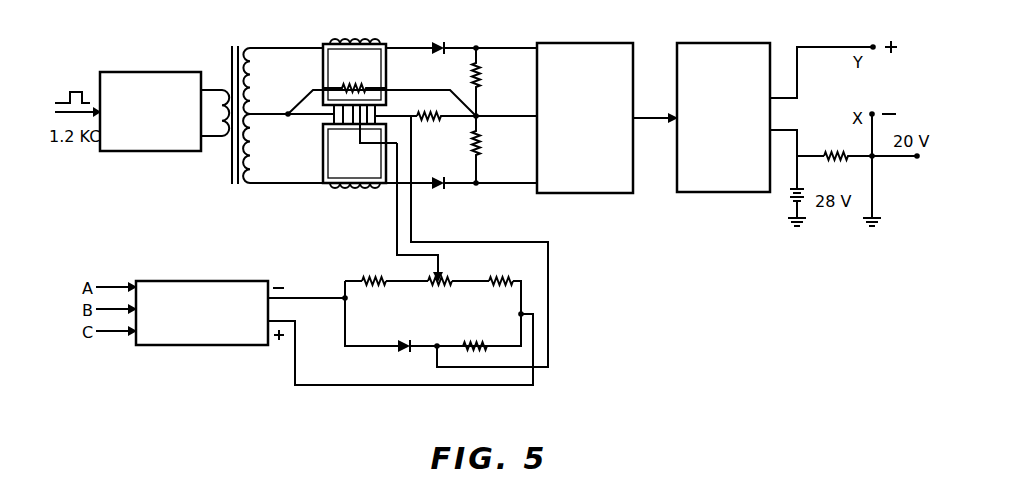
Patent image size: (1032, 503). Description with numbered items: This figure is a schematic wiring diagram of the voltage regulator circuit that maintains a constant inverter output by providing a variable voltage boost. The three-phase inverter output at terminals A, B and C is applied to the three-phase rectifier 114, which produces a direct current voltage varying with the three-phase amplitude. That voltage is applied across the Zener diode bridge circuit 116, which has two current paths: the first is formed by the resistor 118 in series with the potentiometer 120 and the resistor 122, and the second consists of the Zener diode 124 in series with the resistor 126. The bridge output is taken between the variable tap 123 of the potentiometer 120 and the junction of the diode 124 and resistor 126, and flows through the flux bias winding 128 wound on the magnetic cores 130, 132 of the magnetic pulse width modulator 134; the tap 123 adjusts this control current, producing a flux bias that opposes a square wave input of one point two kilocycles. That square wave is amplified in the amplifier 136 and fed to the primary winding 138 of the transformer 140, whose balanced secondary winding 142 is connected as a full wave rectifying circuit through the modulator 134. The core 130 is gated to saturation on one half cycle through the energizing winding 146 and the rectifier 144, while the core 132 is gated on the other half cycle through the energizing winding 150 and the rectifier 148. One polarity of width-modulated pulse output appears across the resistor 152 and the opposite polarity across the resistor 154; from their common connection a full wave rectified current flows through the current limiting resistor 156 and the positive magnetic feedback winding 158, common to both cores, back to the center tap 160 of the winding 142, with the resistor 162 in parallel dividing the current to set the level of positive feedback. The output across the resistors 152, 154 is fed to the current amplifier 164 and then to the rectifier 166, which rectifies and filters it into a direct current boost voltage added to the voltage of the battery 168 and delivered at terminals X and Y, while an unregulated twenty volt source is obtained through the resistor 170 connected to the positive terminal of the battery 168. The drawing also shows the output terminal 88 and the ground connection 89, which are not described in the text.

The 3-phase rectifier 114 is at (177, 281).
The Zener diode bridge circuit 116 is at (514, 271).
The resistor 118 is at (378, 275).
The potentiometer 120 is at (430, 290).
The resistor 122 is at (500, 290).
The variable tap 123 is at (441, 276).
The Zener diode 124 is at (398, 349).
The resistor 126 is at (490, 329).
The flux bias winding 128 is at (387, 107).
The magnetic core 130 is at (355, 100).
The magnetic core 132 is at (322, 171).
The magnetic pulse width modulator 134 is at (373, 30).
The amplifier 136 is at (140, 72).
The primary winding 138 is at (221, 87).
The transformer 140 is at (234, 47).
The balanced secondary winding 142 is at (255, 81).
The rectifier 144 is at (435, 44).
The energizing winding 146 is at (384, 44).
The rectifier 148 is at (437, 186).
The energizing winding 150 is at (368, 181).
The resistor 152 is at (480, 87).
The resistor 154 is at (480, 152).
The current limiting resistor 156 is at (422, 120).
The positive magnetic feedback winding 158 is at (308, 94).
The center tap 160 is at (253, 116).
The resistor 162 is at (367, 87).
The current amplifier 164 is at (577, 43).
The rectifier 166 is at (715, 44).
The battery 168 is at (787, 186).
The resistor 170 is at (827, 135).
The output terminal 88 is at (925, 160).
The ground connection 89 is at (862, 218).